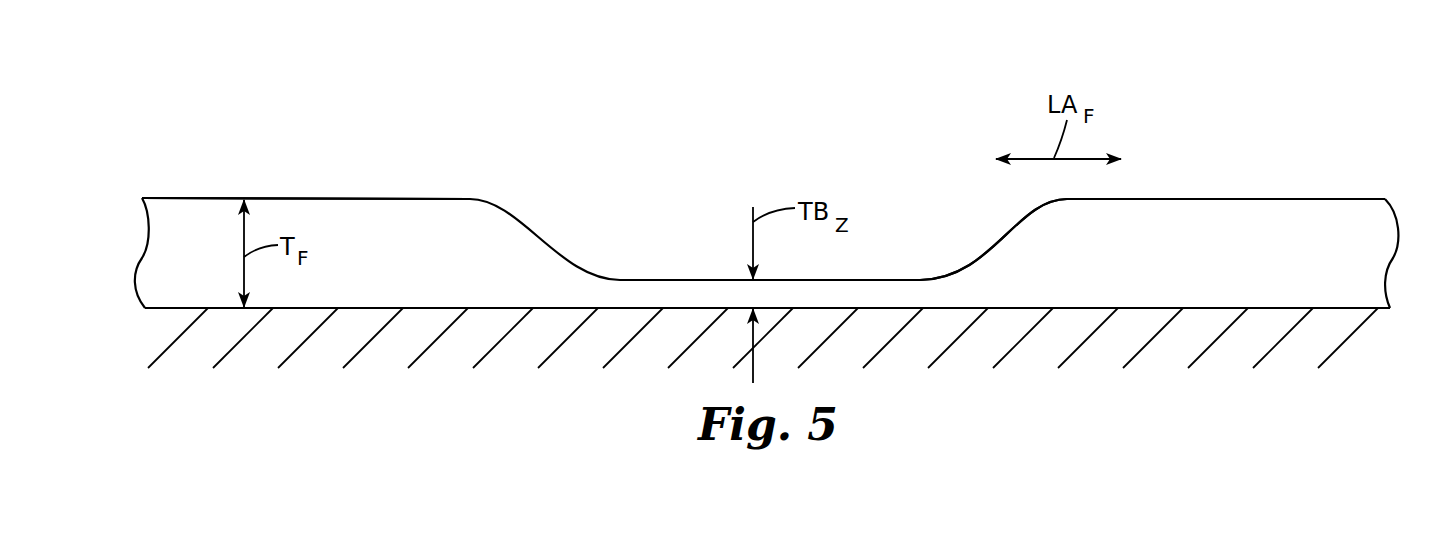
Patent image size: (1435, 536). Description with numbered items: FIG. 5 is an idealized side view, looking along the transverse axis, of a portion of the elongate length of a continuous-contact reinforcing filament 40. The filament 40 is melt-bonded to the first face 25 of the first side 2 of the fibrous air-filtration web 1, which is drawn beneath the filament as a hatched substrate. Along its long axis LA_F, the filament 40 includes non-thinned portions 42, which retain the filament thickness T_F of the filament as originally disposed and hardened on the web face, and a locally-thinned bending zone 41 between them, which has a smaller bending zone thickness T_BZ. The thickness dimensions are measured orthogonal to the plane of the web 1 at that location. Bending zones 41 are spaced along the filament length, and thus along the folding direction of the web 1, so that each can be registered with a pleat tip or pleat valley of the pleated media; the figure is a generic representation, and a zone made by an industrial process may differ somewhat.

The fibrous air-filtration web 1 is at (312, 357).
The first side 2 is at (473, 127).
The first face 25 is at (1137, 320).
The continuous-contact reinforcing filament 40 is at (886, 93).
The locally-thinned bending zone 41 is at (710, 243).
The non-thinned portion 42 is at (252, 163).